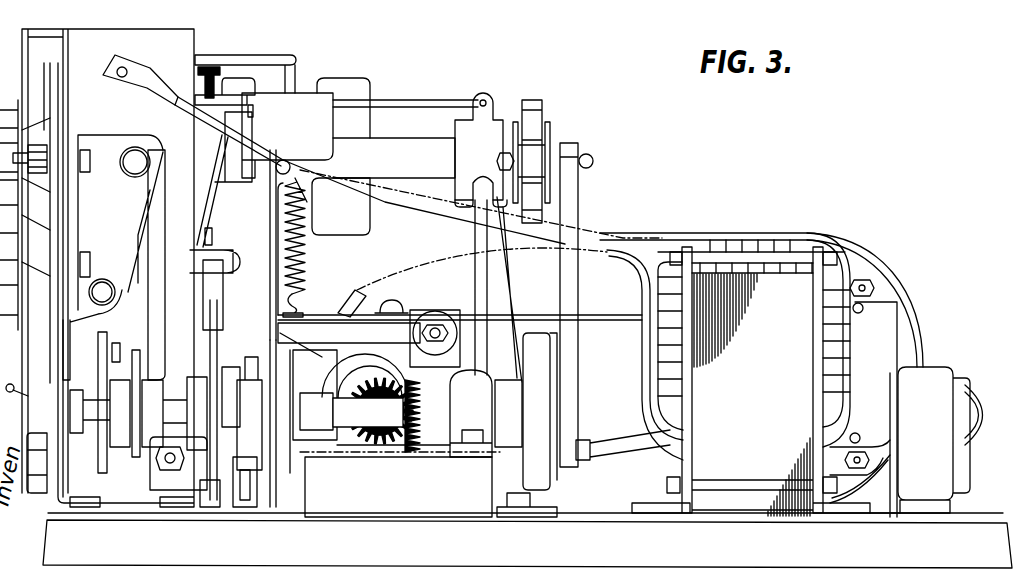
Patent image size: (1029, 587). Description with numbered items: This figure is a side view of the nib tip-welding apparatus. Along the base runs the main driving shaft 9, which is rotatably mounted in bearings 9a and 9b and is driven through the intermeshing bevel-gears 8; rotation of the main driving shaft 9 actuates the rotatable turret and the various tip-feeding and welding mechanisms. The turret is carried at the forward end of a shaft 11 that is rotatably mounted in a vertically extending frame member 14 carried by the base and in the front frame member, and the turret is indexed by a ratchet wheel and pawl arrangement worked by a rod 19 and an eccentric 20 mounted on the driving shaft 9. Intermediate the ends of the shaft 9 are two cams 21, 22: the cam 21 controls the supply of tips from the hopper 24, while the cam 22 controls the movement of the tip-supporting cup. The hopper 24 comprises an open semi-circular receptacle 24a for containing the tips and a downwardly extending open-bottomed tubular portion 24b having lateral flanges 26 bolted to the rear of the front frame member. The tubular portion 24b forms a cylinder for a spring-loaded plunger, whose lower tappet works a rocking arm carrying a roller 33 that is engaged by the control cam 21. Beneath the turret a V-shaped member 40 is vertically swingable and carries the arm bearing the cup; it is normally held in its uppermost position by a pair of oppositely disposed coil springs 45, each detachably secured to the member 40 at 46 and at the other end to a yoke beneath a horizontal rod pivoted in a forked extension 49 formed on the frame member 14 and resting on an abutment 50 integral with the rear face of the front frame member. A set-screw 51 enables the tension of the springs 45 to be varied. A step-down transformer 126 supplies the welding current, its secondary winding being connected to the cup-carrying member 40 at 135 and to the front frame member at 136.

The secondary winding connection point 136 is at (124, 69).
The set-screw 51 is at (212, 65).
The abutment 50 is at (212, 112).
The semi-circular receptacle 24a is at (298, 95).
The hopper 24 is at (325, 92).
The shaft 11 is at (400, 140).
The forked extension 49 is at (489, 107).
The lateral flanges 26 is at (222, 226).
The tubular portion 24b is at (258, 263).
The coil springs 45 is at (300, 284).
The spring attachment point 46 is at (301, 304).
The secondary winding connection point 135 is at (343, 308).
The V-shaped member 40 is at (375, 306).
The vertically extending frame member 14 is at (502, 272).
The rod 19 is at (573, 297).
The step-down transformer 126 is at (772, 287).
The cam 21 is at (253, 358).
The main driving shaft 9 is at (348, 418).
The bevel-gears 8 is at (410, 445).
The bearing 9a is at (473, 430).
The eccentric 20 is at (544, 480).
The cam 22 is at (212, 492).
The roller 33 is at (248, 492).
The bearing 9b is at (273, 513).